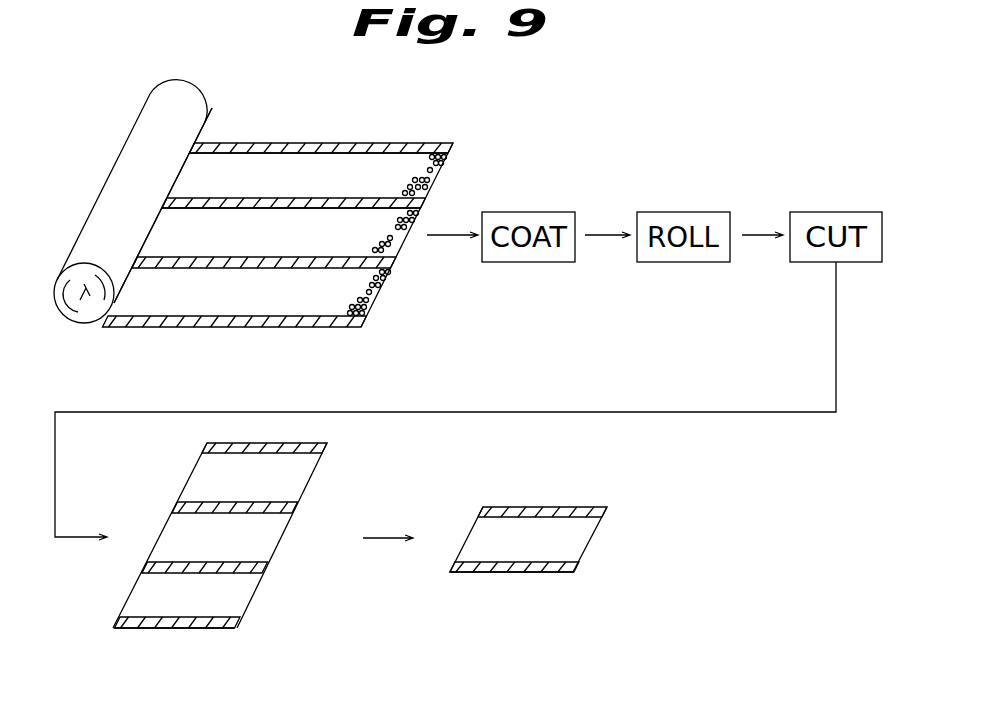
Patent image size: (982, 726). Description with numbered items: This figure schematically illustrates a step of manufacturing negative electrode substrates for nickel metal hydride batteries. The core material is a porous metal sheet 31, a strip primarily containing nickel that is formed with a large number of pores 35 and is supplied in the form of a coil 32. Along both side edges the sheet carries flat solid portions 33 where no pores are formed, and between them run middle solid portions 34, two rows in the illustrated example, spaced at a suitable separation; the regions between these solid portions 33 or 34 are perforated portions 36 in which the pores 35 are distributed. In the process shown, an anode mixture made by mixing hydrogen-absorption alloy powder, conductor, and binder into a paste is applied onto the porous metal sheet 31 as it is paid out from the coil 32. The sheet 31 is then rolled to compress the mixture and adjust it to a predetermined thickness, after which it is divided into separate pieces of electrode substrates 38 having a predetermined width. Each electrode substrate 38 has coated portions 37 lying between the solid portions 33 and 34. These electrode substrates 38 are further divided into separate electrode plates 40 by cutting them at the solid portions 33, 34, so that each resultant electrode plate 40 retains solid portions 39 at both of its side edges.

The porous metal sheet 31 is at (213, 292).
The coil 32 is at (84, 330).
The solid portions 33 is at (313, 143).
The middle solid portions 34 is at (270, 256).
The pores 35 is at (446, 165).
The perforated portions 36 is at (367, 191).
The coated portions 37 is at (250, 496).
The electrode substrates 38 is at (176, 636).
The solid portions 39 is at (540, 510).
The electrode plates 40 is at (488, 581).